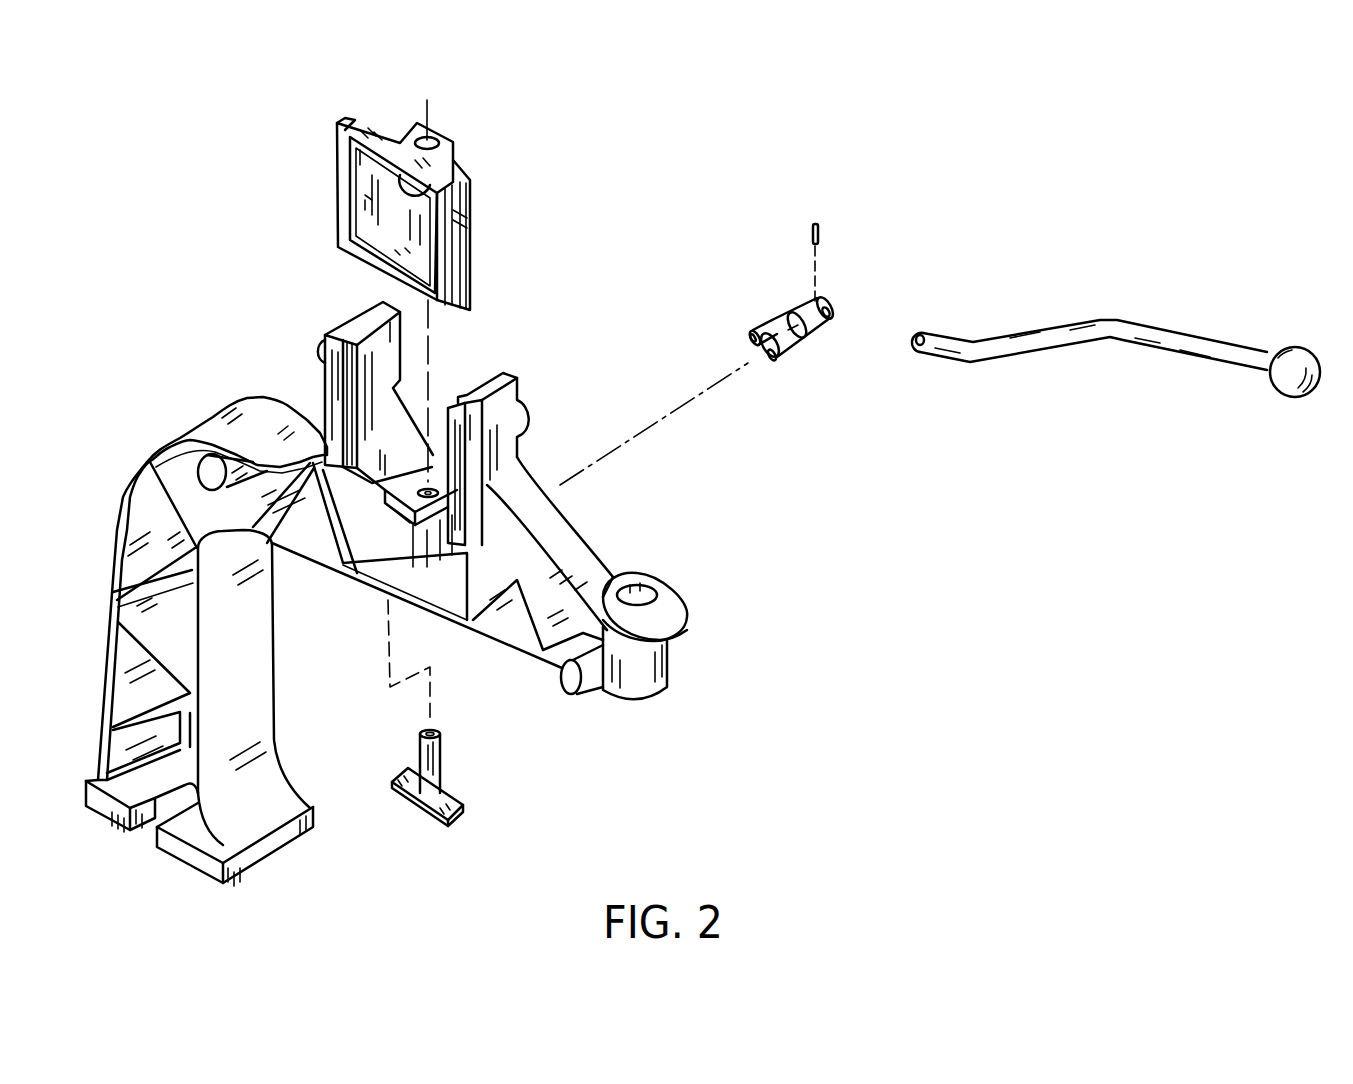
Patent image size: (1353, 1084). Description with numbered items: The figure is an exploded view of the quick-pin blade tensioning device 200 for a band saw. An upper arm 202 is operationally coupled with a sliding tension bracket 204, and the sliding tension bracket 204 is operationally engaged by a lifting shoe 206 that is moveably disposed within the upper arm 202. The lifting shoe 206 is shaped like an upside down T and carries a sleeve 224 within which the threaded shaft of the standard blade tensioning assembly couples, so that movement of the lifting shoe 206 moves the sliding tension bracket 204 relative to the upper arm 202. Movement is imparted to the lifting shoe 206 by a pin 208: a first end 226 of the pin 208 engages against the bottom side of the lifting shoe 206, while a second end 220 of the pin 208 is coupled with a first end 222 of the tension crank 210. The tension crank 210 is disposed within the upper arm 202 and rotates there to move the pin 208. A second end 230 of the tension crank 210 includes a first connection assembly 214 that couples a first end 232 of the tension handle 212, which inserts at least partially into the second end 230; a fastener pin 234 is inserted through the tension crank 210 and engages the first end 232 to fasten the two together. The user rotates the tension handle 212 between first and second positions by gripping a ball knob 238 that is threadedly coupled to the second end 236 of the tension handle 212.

The quick-pin blade tensioning device 200 is at (983, 163).
The upper arm 202 is at (195, 435).
The sliding tension bracket 204 is at (370, 123).
The lifting shoe 206 is at (420, 800).
The pin 208 is at (760, 333).
The tension crank 210 is at (797, 313).
The tension handle 212 is at (1100, 318).
The first connection assembly 214 is at (837, 317).
The second end of the pin 220 is at (773, 317).
The first end of the tension crank 222 is at (770, 360).
The sleeve 224 is at (440, 733).
The first end of the pin 226 is at (757, 340).
The second end of the tension crank 230 is at (830, 303).
The first end of the tension handle 232 is at (920, 340).
The fastener pin 234 is at (820, 227).
The second end of the tension handle 236 is at (1263, 357).
The ball knob 238 is at (1293, 383).